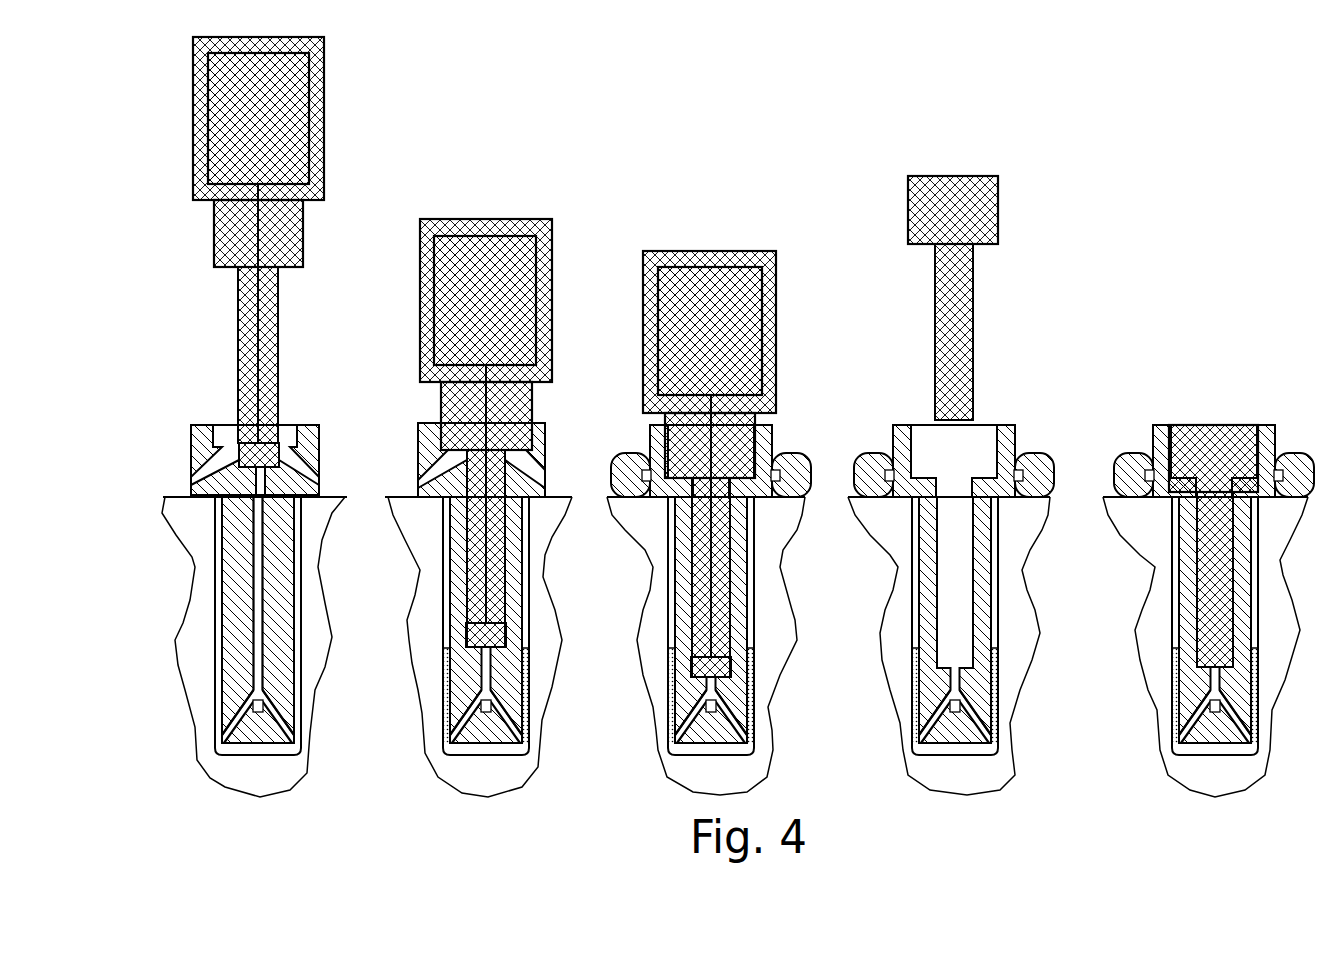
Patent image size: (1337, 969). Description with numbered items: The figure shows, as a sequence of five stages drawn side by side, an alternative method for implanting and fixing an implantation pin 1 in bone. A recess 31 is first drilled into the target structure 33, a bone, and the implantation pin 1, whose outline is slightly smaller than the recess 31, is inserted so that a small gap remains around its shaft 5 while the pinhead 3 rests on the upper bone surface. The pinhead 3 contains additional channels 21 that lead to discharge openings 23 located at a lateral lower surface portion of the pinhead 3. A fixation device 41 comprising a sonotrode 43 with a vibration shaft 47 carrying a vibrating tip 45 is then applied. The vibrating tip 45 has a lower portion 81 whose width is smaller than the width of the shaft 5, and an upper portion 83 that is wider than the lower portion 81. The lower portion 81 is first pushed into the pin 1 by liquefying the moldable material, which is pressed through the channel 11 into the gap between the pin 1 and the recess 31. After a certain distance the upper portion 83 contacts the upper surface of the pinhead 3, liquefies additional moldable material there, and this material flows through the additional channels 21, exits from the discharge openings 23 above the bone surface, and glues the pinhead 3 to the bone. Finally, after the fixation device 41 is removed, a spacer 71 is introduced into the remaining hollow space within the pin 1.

The implantation pin 1 is at (178, 477).
The pinhead 3 is at (313, 426).
The shaft 5 is at (277, 605).
The channel 11 is at (260, 645).
The additional channels 21 is at (317, 447).
The discharge openings 23 is at (313, 470).
The recess 31 is at (288, 757).
The target structure 33 is at (256, 787).
The fixation device 41 is at (288, 280).
The sonotrode 43 is at (320, 122).
The vibrating tip 45 is at (272, 357).
The vibration shaft 47 is at (260, 318).
The spacer 71 is at (962, 297).
The lower portion 81 is at (250, 343).
The upper portion 83 is at (222, 245).